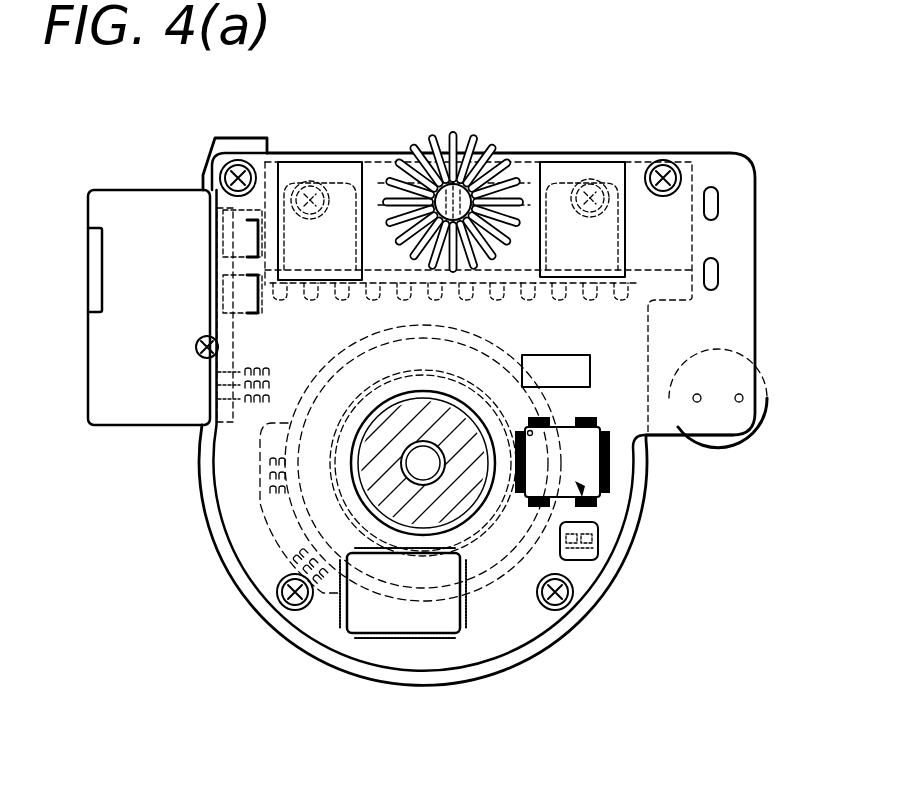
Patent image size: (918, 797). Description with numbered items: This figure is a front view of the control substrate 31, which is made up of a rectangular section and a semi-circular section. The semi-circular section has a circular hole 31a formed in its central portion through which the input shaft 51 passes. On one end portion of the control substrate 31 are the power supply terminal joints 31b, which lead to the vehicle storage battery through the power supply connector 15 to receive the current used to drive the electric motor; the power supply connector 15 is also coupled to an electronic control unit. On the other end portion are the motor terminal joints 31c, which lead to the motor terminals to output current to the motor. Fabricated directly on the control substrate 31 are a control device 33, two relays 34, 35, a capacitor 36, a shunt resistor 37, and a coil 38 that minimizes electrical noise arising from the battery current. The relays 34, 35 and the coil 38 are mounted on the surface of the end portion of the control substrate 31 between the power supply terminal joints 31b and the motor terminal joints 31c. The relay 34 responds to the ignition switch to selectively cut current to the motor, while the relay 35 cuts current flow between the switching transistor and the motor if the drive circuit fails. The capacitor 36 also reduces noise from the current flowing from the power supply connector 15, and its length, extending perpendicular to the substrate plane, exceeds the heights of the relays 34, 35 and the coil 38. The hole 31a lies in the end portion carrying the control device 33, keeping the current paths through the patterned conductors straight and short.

The power supply connector 15 is at (145, 200).
The control substrate 31 is at (492, 640).
The hole 31a is at (363, 503).
The power supply terminal joints 31b is at (253, 295).
The motor terminal joints 31c is at (717, 273).
The control device 33 is at (600, 505).
The relay 34 is at (322, 170).
The relay 35 is at (590, 170).
The capacitor 36 is at (733, 440).
The shunt resistor 37 is at (577, 372).
The coil 38 is at (455, 135).
The input shaft 51 is at (462, 500).